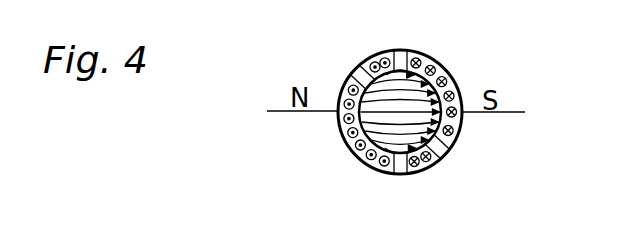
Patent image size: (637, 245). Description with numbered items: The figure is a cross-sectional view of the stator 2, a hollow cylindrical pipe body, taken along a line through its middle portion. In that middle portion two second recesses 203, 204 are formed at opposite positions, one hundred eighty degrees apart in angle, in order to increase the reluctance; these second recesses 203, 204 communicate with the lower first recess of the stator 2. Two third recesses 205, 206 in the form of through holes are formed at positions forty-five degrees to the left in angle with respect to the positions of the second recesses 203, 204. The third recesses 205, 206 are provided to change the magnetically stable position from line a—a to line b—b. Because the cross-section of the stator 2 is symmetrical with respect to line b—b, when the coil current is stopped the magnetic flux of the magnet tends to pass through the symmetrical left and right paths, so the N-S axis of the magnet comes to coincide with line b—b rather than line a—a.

The stator 2 is at (380, 55).
The second recess 203 is at (400, 174).
The second recess 204 is at (401, 53).
The third recess 205 is at (445, 154).
The third recess 206 is at (356, 71).
The line a— a is at (397, 110).
The line b— b is at (448, 72).